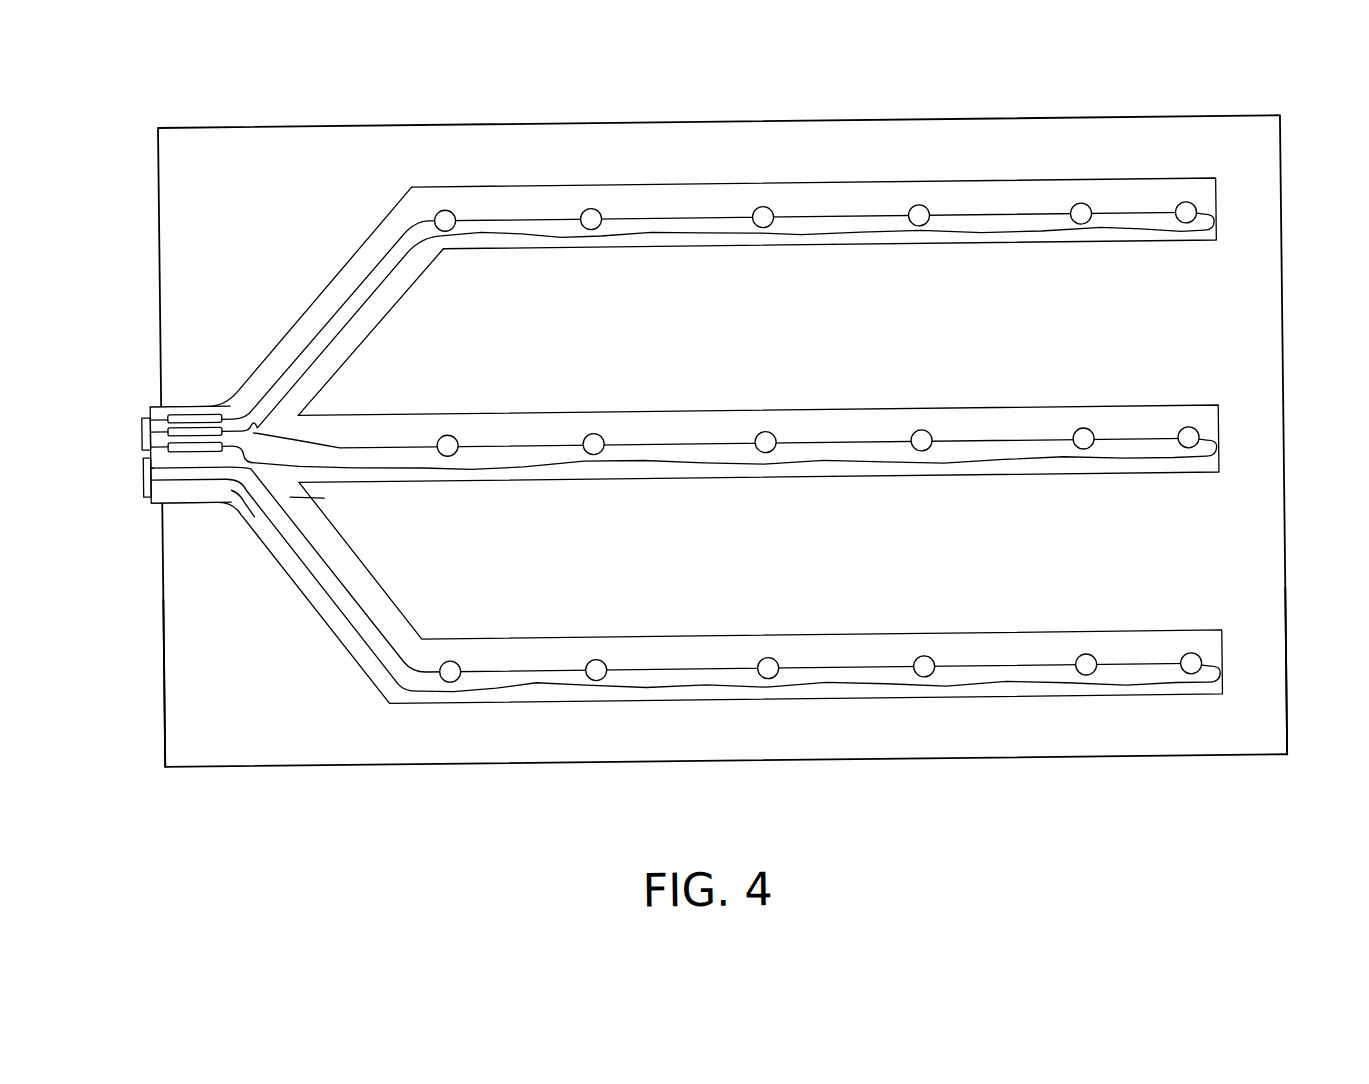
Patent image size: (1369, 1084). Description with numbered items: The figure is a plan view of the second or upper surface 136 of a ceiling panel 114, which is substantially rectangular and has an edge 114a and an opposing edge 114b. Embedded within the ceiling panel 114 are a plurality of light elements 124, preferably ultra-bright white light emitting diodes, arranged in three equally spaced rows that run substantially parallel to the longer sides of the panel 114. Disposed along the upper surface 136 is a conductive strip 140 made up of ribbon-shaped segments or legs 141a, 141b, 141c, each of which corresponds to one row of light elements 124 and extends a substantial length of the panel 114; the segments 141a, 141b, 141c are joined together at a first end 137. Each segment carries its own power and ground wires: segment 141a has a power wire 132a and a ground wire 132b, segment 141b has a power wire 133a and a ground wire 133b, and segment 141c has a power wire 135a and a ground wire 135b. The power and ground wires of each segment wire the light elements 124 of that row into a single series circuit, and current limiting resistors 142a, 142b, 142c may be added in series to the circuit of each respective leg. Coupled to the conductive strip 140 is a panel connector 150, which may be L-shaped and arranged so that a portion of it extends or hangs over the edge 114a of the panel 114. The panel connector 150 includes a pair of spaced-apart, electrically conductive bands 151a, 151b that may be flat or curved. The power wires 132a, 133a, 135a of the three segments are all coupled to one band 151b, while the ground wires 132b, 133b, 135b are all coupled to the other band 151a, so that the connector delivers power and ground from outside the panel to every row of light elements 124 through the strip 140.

The ceiling panel 114 is at (1096, 767).
The edge of the panel 114a is at (156, 750).
The opposing edge of the panel 114b is at (1282, 745).
The light elements 124 is at (764, 208).
The second or upper surface 136 is at (1196, 175).
The conductive strip 140 is at (296, 322).
The first segment or leg 141a is at (507, 190).
The second segment or leg 141b is at (495, 418).
The third segment or leg 141c is at (494, 642).
The power wire 132a is at (366, 268).
The ground wire 132b is at (391, 283).
The power wire 133a is at (336, 447).
The ground wire 133b is at (334, 472).
The power wire 135a is at (366, 620).
The ground wire 135b is at (357, 642).
The first end 137 is at (286, 498).
The current limiting resistor 142a is at (166, 415).
The current limiting resistor 142b is at (210, 429).
The current limiting resistor 142c is at (169, 453).
The panel connector 150 is at (143, 406).
The electrically conductive band 151a is at (139, 477).
The electrically conductive band 151b is at (140, 428).